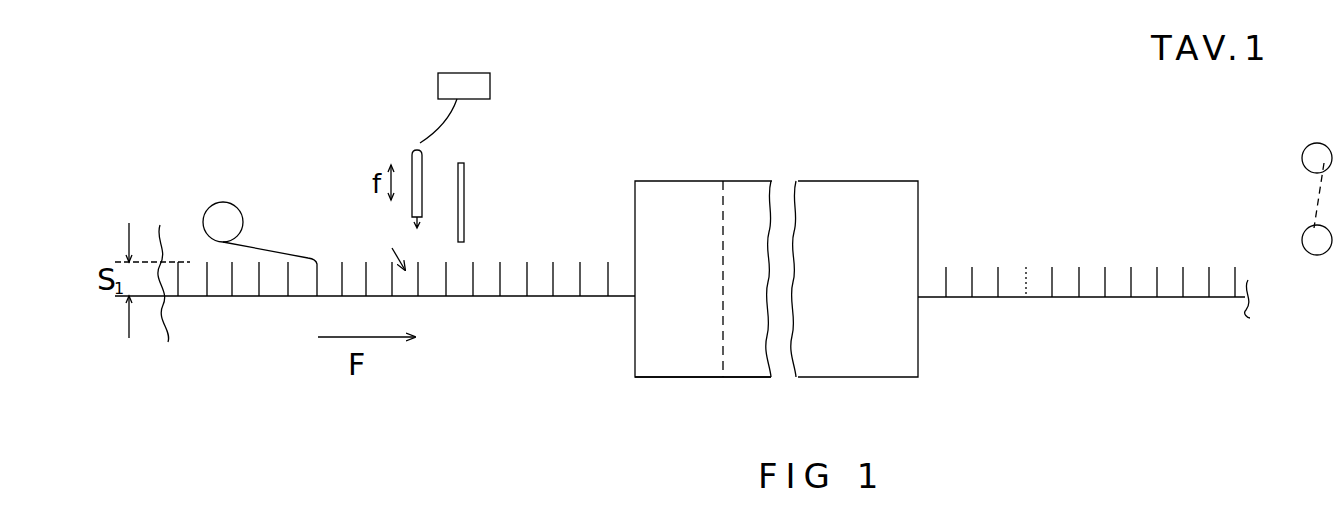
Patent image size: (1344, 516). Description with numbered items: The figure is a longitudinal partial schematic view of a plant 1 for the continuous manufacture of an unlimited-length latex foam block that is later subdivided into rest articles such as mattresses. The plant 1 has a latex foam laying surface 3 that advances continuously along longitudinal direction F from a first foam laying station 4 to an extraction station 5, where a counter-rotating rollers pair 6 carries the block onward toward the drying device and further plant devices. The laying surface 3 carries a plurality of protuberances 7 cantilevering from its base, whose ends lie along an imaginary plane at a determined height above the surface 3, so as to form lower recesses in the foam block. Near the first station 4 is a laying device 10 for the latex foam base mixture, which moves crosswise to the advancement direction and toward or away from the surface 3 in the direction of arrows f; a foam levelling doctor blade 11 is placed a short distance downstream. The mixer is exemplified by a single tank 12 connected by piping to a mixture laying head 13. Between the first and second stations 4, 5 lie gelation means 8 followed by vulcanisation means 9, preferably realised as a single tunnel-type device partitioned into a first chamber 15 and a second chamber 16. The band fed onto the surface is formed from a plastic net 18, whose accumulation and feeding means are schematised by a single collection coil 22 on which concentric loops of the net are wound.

The plant 1 is at (727, 157).
The latex foam laying surface 3 is at (535, 298).
The first foam laying station 4 is at (394, 245).
The extraction station 5 is at (1302, 217).
The counter-rotating rollers pair 6 is at (1311, 240).
The protuberances 7 is at (972, 280).
The gelation means 8 is at (703, 279).
The vulcanisation means 9 is at (858, 279).
The laying device 10 is at (417, 150).
The foam levelling doctor blade 11 is at (465, 187).
The tank 12 is at (490, 83).
The mixture laying head 13 is at (439, 234).
The first chamber 15 is at (685, 368).
The second chamber 16 is at (750, 367).
The plastic net 18 is at (270, 248).
The collection coil 22 is at (222, 220).